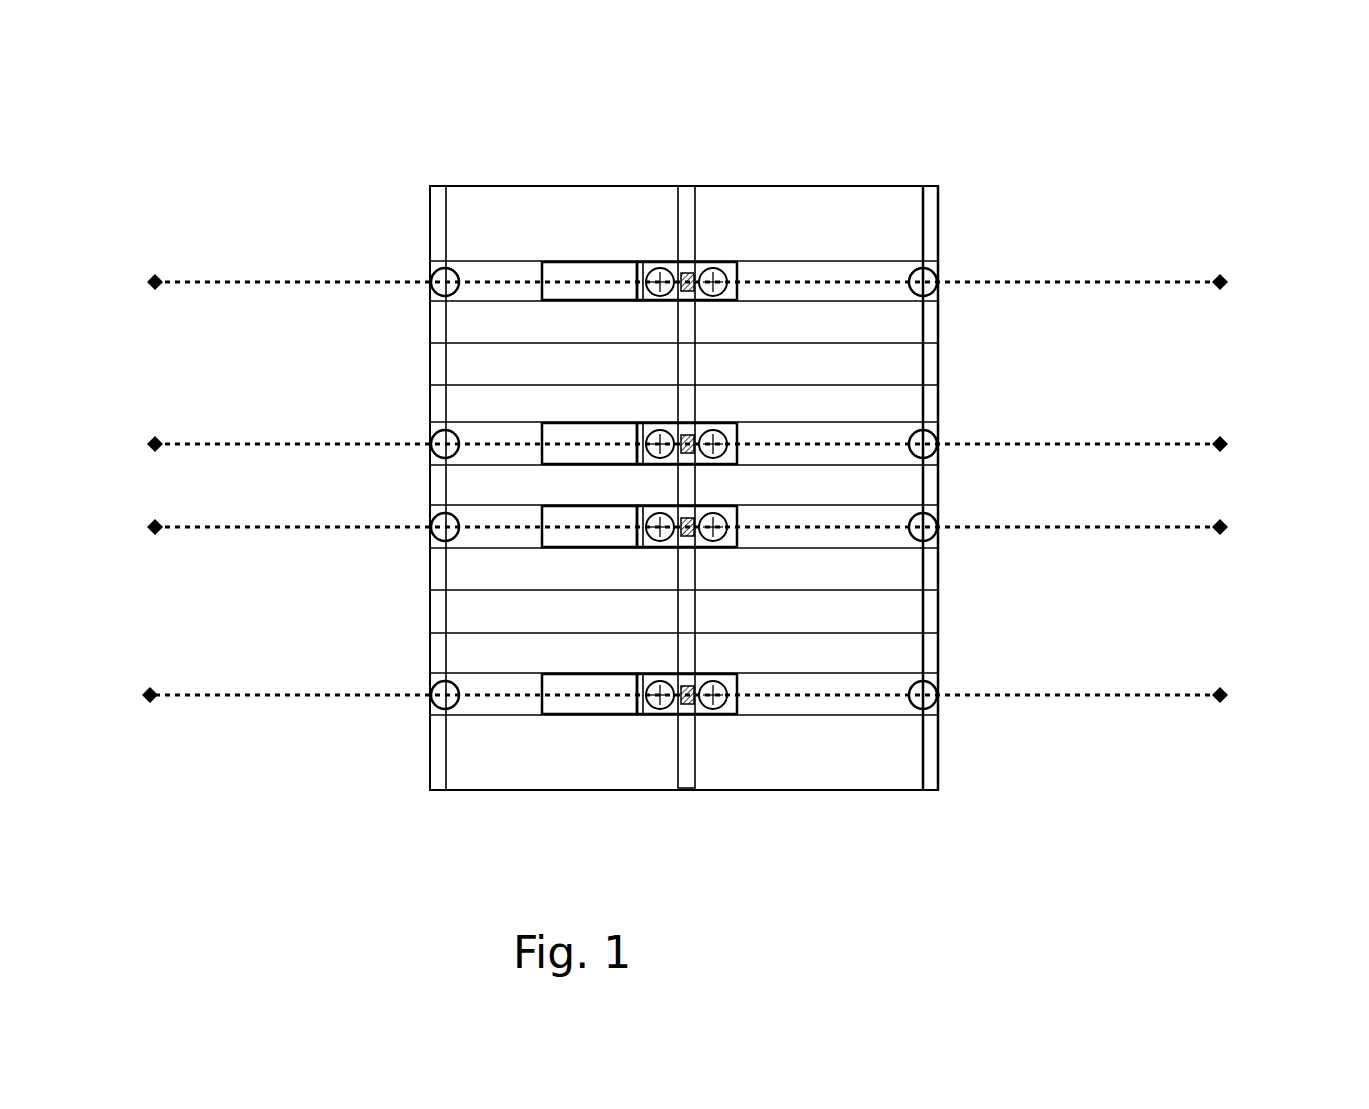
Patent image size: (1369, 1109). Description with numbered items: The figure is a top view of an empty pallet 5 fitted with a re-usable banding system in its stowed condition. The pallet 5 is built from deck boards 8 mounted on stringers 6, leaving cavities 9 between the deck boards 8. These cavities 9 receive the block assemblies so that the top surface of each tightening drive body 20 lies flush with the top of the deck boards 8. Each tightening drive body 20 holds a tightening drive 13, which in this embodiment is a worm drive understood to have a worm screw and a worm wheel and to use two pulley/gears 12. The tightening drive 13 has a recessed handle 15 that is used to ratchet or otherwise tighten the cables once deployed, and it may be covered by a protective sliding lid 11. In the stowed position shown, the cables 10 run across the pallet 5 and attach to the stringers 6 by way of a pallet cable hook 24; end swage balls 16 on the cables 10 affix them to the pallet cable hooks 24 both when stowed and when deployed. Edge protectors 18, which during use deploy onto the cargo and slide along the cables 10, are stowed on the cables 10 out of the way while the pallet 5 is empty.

The pallet 5 is at (941, 597).
The stringer 6 is at (941, 186).
The deck board 8 is at (482, 754).
The cavity 9 is at (478, 613).
The cable 10 is at (258, 278).
The protective sliding lid 11 is at (577, 252).
The pulley/gear 12 is at (719, 720).
The tightening drive 13 is at (678, 258).
The recessed handle 15 is at (718, 258).
The end swage ball 16 is at (1230, 704).
The edge protector 18 is at (941, 440).
The tightening drive body 20 is at (940, 184).
The pallet cable hook 24 is at (259, 414).